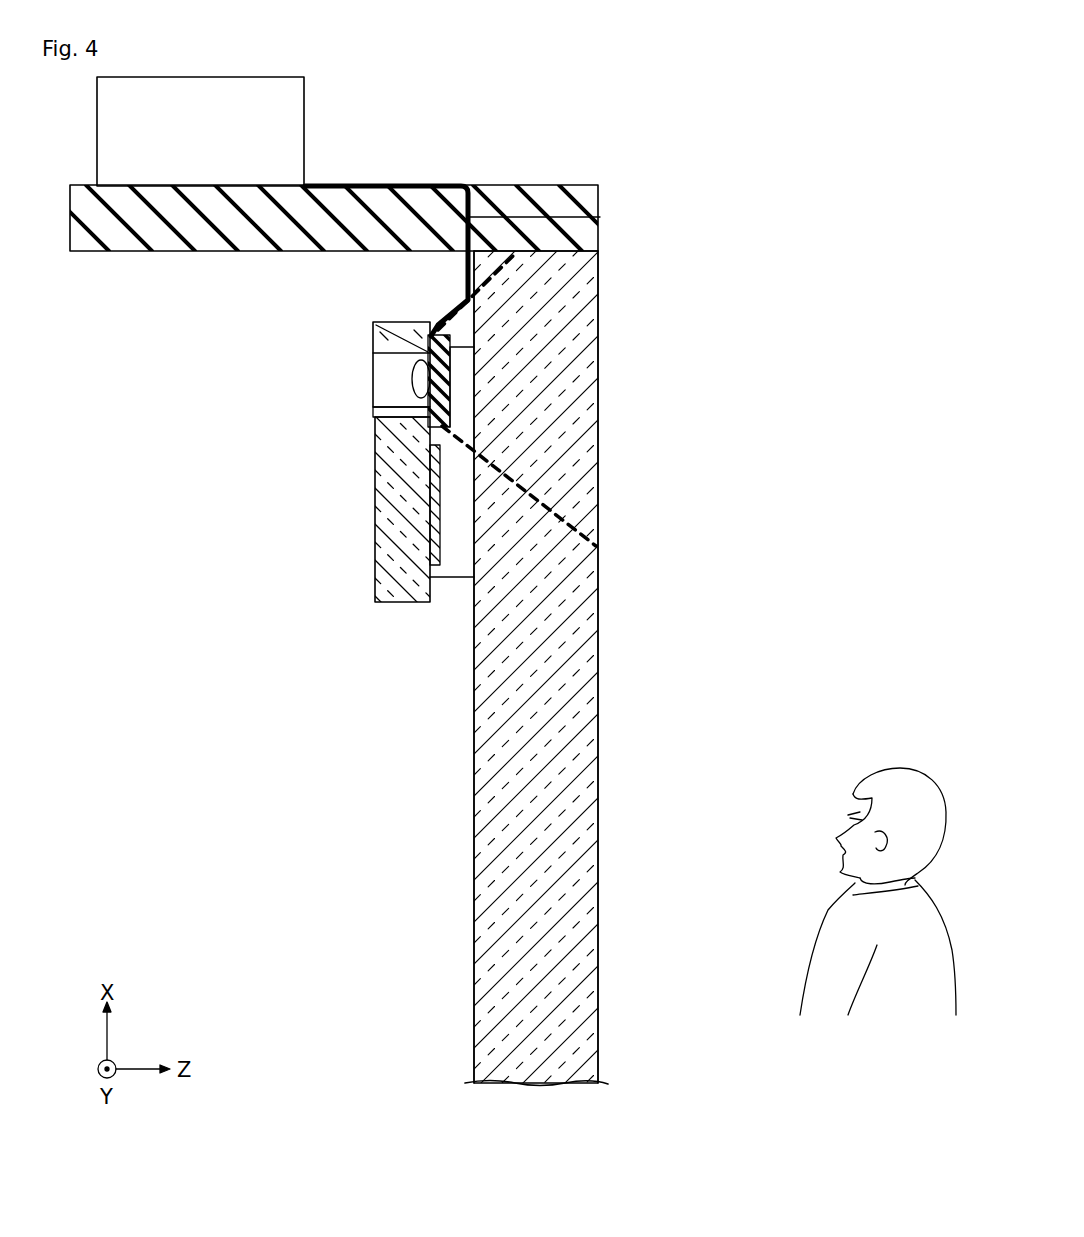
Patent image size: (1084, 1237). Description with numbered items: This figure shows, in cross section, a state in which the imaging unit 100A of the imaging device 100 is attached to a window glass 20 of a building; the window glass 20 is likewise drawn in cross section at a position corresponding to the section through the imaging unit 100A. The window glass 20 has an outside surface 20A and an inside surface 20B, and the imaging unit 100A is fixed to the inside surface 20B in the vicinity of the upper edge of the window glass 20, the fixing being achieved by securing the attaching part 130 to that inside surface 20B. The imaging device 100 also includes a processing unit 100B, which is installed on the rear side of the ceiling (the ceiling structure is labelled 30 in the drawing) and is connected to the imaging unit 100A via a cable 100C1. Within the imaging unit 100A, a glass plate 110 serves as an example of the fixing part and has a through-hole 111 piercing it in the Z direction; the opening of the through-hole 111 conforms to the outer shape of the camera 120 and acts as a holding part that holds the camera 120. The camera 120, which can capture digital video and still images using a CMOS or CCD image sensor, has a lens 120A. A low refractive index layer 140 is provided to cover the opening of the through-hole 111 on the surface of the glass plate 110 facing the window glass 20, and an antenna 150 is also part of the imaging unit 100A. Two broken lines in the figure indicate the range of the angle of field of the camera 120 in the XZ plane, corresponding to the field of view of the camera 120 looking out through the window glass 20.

The window glass 20 is at (597, 902).
The outside surface 20A is at (598, 1003).
The inside surface 20B is at (474, 1033).
The roof panel 30 is at (118, 252).
The imaging device 100 is at (334, 206).
The imaging unit 100A is at (404, 322).
The processing unit 100B is at (306, 105).
The cable 100C1 is at (600, 217).
The glass plate 110 is at (376, 560).
The through-hole 111 is at (385, 414).
The camera 120 is at (497, 372).
The lens 120A is at (432, 383).
The attaching part 130 is at (458, 512).
The low refractive index layer 140 is at (450, 372).
The antenna 150 is at (448, 545).